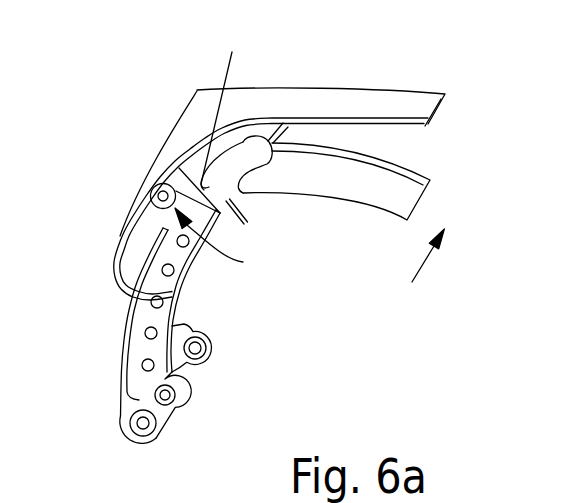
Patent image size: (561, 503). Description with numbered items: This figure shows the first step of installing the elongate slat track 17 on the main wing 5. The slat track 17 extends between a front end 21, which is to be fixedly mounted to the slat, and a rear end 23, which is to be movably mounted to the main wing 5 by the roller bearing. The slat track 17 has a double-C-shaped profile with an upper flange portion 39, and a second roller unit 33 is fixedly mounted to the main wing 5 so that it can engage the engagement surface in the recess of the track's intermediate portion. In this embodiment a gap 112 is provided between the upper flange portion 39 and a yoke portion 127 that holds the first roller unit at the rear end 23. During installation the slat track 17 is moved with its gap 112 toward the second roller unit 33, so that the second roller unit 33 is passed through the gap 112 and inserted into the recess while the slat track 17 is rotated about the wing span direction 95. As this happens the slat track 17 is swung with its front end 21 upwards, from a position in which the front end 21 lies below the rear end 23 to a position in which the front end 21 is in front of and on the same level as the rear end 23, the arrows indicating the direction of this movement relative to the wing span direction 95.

The main wing 5 is at (200, 113).
The yoke portion 127 is at (214, 117).
The rear end 23 is at (252, 138).
The second roller unit 33 is at (163, 196).
The upper flange portion 39 is at (130, 295).
The slat track 17 is at (148, 333).
The front end 21 is at (143, 423).
The gap 112 is at (234, 243).
The wing span direction 95 is at (424, 266).